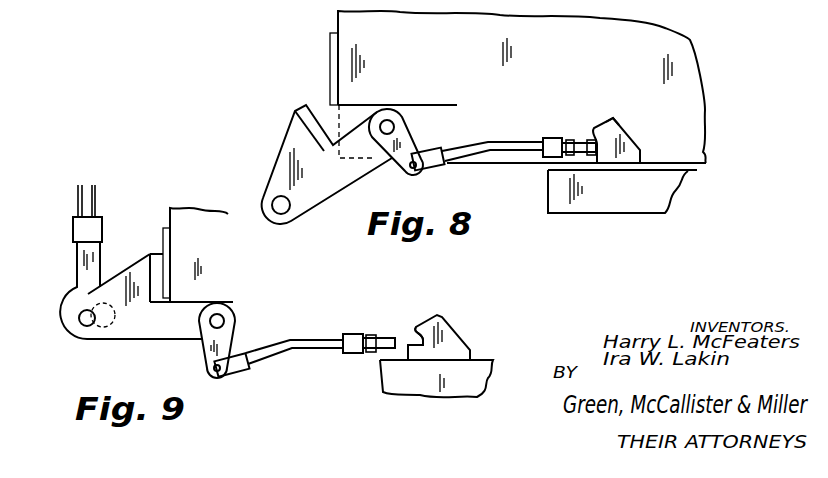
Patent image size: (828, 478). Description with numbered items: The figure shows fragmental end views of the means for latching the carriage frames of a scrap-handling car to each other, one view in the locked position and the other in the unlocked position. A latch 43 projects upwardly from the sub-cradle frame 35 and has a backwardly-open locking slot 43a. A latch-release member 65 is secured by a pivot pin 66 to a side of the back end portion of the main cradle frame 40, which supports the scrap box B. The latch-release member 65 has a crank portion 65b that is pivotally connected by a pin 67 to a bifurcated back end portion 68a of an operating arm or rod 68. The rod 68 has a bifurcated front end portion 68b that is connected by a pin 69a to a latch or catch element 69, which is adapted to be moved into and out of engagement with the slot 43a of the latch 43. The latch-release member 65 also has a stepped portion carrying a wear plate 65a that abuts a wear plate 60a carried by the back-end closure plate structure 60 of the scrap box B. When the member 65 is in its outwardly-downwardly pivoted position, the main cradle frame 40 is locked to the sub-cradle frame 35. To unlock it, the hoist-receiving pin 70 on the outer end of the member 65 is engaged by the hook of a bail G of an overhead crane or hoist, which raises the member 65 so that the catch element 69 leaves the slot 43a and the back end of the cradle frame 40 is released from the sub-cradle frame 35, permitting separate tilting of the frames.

In FIG. 8, the scrap box B is at (522, 87).
In FIG. 9, the scrap box B is at (191, 255).
In FIG. 9, the bail G is at (77, 257).
In FIG. 8, the sub-cradle frame 35 is at (663, 213).
In FIG. 9, the sub-cradle frame 35 is at (489, 359).
In FIG. 8, the main cradle frame 40 is at (703, 157).
In FIG. 8, the latch 43 is at (639, 143).
In FIG. 9, the latch 43 is at (463, 333).
In FIG. 8, the latching or locking slot 43a is at (703, 107).
In FIG. 9, the latching or locking slot 43a is at (420, 337).
In FIG. 8, the back-end closure plate structure 60 is at (338, 14).
In FIG. 8, the wear plate 60a is at (330, 45).
In FIG. 9, the wear plate 60a is at (166, 232).
In FIG. 8, the latch-release member 65 is at (352, 178).
In FIG. 9, the latch-release member 65 is at (133, 265).
In FIG. 8, the wear plate 65a is at (306, 106).
In FIG. 9, the wear plate 65a is at (156, 254).
In FIG. 8, the crank portion 65b is at (412, 133).
In FIG. 9, the crank portion 65b is at (240, 322).
In FIG. 8, the pivot pin 66 is at (386, 109).
In FIG. 9, the pivot pin 66 is at (205, 303).
In FIG. 8, the pin 67 is at (415, 171).
In FIG. 9, the pin 67 is at (208, 376).
In FIG. 8, the operating arm or rod 68 is at (487, 141).
In FIG. 9, the operating arm or rod 68 is at (298, 340).
In FIG. 8, the bifurcated back end portion 68a is at (437, 170).
In FIG. 9, the bifurcated back end portion 68a is at (246, 366).
In FIG. 8, the bifurcated front end portion 68b is at (544, 140).
In FIG. 9, the bifurcated front end portion 68b is at (352, 333).
In FIG. 8, the latch or catch element 69 is at (579, 141).
In FIG. 9, the latch or catch element 69 is at (387, 337).
In FIG. 8, the pin 69a is at (567, 140).
In FIG. 9, the pin 69a is at (370, 353).
In FIG. 8, the hoist-receiving pin 70 is at (274, 200).
In FIG. 9, the hoist-receiving pin 70 is at (86, 326).